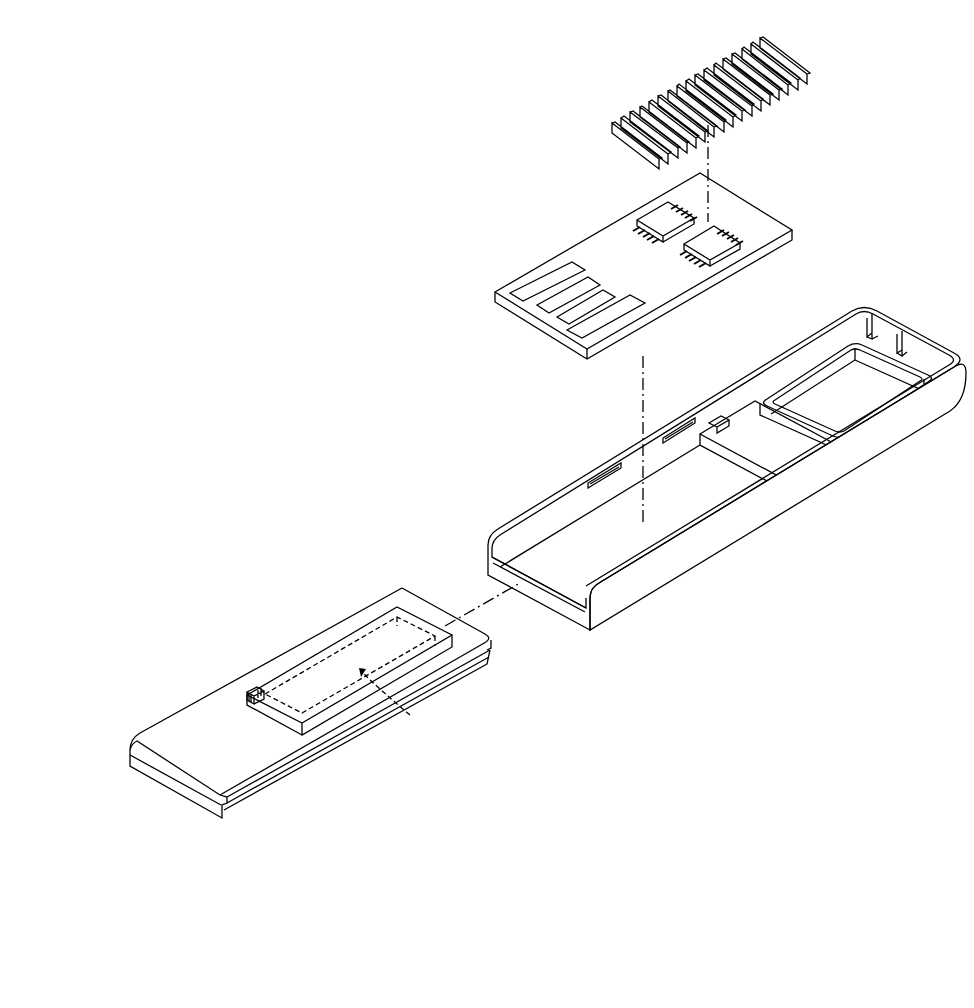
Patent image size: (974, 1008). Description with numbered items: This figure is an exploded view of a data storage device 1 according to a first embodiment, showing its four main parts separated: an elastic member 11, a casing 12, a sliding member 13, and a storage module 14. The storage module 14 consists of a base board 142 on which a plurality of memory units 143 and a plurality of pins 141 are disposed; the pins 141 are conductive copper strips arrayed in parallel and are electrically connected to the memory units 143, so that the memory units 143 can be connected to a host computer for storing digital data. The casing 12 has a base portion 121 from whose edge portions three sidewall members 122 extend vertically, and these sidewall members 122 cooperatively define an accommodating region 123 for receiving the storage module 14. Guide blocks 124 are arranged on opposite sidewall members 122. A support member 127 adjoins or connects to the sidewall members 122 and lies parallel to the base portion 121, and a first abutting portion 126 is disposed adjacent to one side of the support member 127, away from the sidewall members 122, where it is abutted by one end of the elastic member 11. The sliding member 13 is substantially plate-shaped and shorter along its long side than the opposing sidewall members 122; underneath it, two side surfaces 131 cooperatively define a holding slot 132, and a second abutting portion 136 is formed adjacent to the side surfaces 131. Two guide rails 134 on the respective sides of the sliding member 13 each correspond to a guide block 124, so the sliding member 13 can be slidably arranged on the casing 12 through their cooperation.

The data storage device 1 is at (389, 437).
The elastic member 11 is at (663, 95).
The casing 12 is at (919, 511).
The base portion 121 is at (572, 567).
The sidewall members 122 is at (788, 378).
The accommodating region 123 is at (583, 538).
The guide blocks 124 is at (608, 482).
The first abutting portion 126 is at (765, 443).
The support member 127 is at (780, 402).
The sliding member 13 is at (507, 732).
The side surfaces 131 is at (430, 680).
The holding slot 132 is at (390, 713).
The guide rails 134 is at (362, 726).
The second abutting portion 136 is at (277, 720).
The storage module 14 is at (603, 149).
The pins 141 is at (562, 298).
The base board 142 is at (598, 256).
The memory units 143 is at (661, 218).